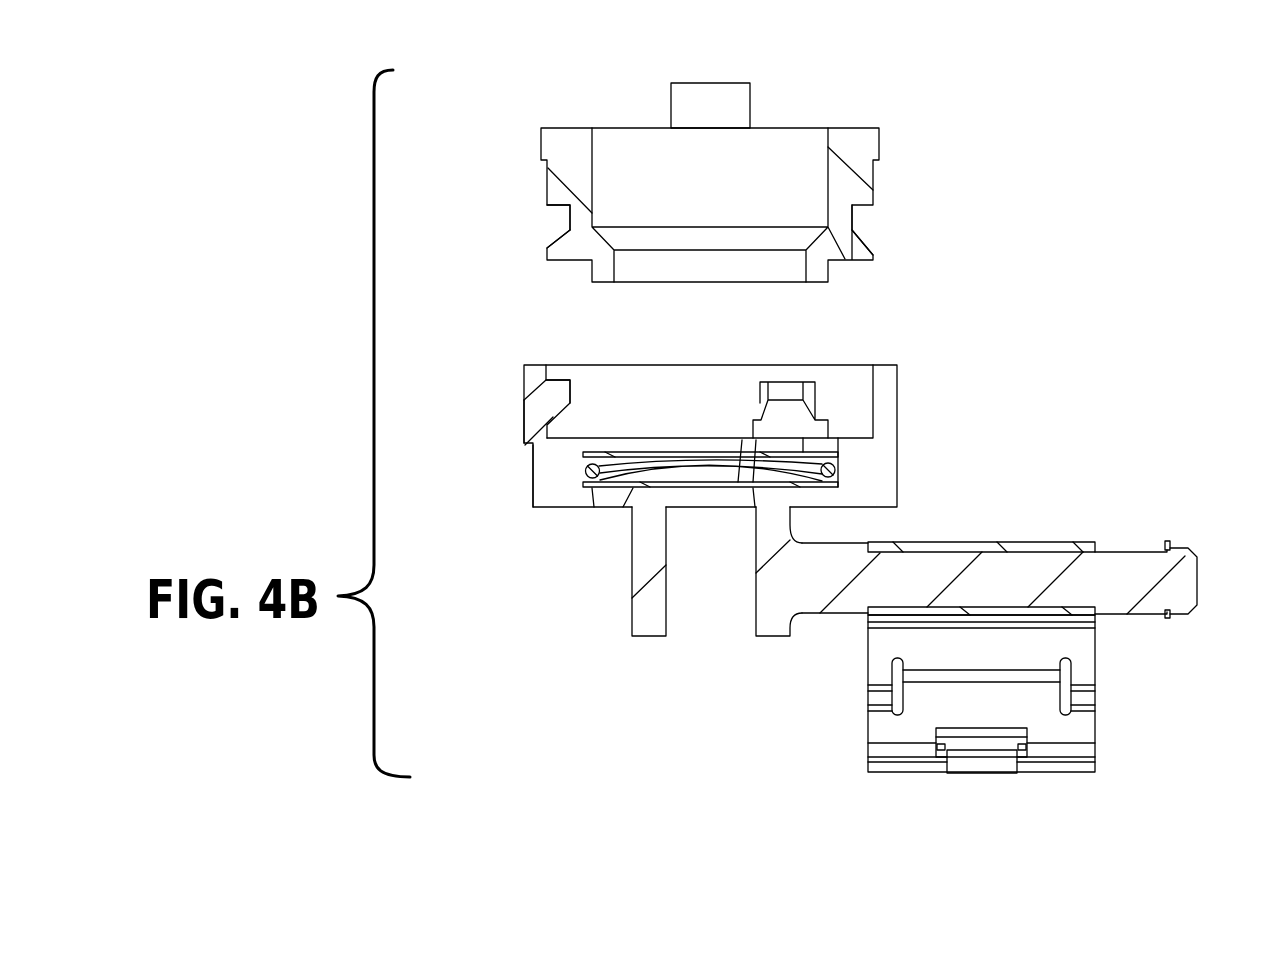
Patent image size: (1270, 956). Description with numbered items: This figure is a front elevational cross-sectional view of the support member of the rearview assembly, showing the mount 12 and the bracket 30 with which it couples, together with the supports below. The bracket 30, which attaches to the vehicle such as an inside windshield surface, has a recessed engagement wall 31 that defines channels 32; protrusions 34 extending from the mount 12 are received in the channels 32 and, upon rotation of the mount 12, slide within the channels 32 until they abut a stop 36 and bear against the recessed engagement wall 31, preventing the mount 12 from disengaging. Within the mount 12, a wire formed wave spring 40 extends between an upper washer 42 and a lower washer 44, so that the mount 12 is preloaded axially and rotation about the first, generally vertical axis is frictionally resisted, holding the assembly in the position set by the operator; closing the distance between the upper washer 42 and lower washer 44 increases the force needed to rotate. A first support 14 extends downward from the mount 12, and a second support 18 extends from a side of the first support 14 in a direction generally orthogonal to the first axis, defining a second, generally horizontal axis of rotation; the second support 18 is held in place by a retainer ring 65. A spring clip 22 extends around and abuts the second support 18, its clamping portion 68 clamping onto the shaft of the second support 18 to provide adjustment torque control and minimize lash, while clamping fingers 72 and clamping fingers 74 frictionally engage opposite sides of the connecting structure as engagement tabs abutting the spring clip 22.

The bracket 30 is at (842, 127).
The channels 32 is at (562, 217).
The recessed engagement wall 31 is at (548, 247).
The protrusions 34 is at (786, 395).
The mount 12 is at (897, 373).
The stop 36 is at (547, 453).
The upper washer 42 is at (840, 456).
The wire formed wave spring 40 is at (840, 470).
The lower washer 44 is at (840, 487).
The first support 14 is at (632, 605).
The second support 18 is at (1198, 568).
The clamping portion 68 is at (1053, 543).
The retainer ring 65 is at (1167, 541).
The spring clip 22 is at (912, 728).
The clamping fingers 72 is at (878, 699).
The clamping fingers 74 is at (1085, 699).